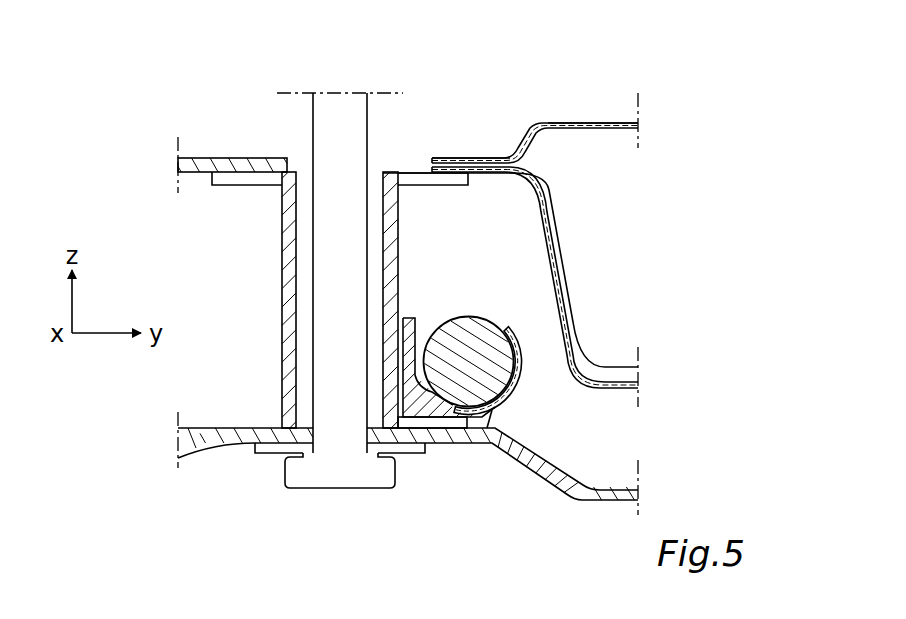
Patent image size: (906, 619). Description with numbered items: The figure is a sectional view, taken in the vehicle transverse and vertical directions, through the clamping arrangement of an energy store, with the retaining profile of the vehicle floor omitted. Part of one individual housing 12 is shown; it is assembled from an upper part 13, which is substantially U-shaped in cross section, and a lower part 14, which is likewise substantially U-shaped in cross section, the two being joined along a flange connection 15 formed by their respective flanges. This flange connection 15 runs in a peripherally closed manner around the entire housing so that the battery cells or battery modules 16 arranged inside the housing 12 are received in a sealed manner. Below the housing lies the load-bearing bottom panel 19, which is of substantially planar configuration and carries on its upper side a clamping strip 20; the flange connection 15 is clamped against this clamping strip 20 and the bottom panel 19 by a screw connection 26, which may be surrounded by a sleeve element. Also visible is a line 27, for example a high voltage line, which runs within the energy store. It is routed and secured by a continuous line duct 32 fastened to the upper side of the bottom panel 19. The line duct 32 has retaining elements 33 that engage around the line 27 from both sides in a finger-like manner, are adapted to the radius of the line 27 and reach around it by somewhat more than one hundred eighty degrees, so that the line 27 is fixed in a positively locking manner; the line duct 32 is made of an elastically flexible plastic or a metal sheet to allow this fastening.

The individual housing 12 is at (655, 169).
The upper part 13 is at (577, 122).
The lower part 14 is at (548, 214).
The flange connection 15 is at (493, 148).
The battery cells or battery modules 16 is at (648, 260).
The bottom panel 19 is at (530, 460).
The clamping strip 20 is at (442, 180).
The screw connection 26 is at (348, 198).
The line 27 is at (487, 373).
The line duct 32 is at (490, 438).
The retaining element 33 is at (518, 345).